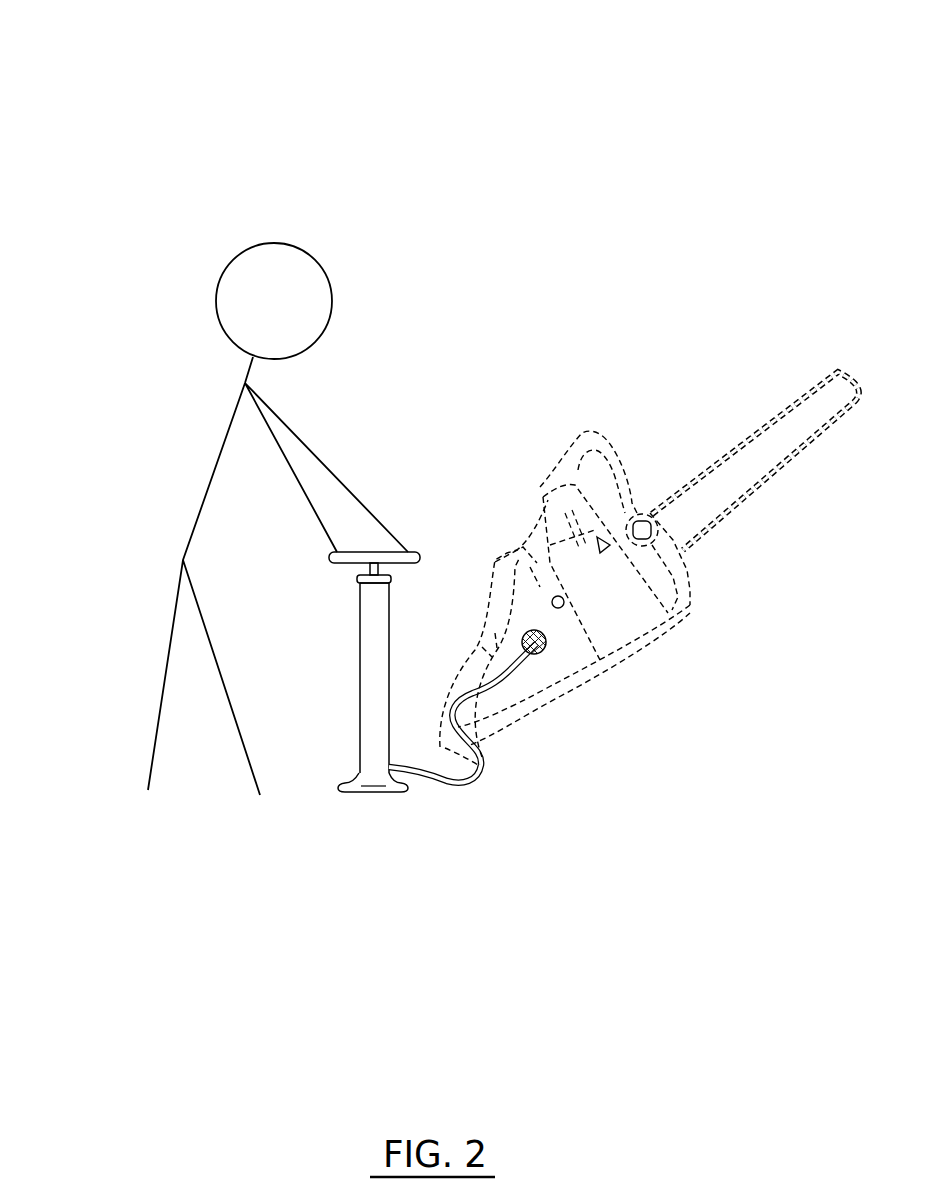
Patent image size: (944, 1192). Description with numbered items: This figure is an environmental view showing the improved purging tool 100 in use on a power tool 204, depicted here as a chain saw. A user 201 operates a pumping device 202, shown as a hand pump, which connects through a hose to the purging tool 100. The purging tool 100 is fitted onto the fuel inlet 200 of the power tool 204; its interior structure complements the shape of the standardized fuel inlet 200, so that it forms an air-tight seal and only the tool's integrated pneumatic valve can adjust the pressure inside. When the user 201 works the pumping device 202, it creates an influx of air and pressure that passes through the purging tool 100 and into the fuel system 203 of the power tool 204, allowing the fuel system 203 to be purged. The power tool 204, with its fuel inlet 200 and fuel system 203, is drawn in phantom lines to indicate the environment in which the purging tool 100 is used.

The user 201 is at (172, 295).
The pumping device 202 is at (400, 625).
The fuel system 203 is at (555, 653).
The purging tool 100 is at (538, 653).
The fuel inlet 200 is at (533, 637).
The power tool 204 is at (772, 387).